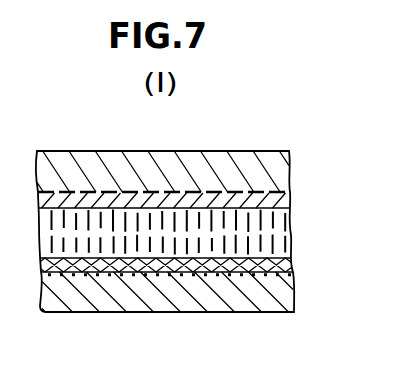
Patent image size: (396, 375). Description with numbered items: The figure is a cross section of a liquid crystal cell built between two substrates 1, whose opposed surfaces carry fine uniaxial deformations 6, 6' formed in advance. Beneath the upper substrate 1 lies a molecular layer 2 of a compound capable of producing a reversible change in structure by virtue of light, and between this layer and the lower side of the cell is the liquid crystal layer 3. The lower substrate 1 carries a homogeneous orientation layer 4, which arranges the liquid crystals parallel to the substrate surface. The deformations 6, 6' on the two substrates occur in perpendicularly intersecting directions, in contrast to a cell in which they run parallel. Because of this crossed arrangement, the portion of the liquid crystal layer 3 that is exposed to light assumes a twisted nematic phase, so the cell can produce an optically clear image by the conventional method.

The transparent substrate 1 is at (283, 163).
The molecular layer 2 is at (286, 203).
The liquid crystal layer 3 is at (284, 222).
The homogeneous orientation layer 4 is at (285, 260).
The fine uniaxial deformation 6 is at (182, 183).
The fine uniaxial deformation 6' is at (185, 277).